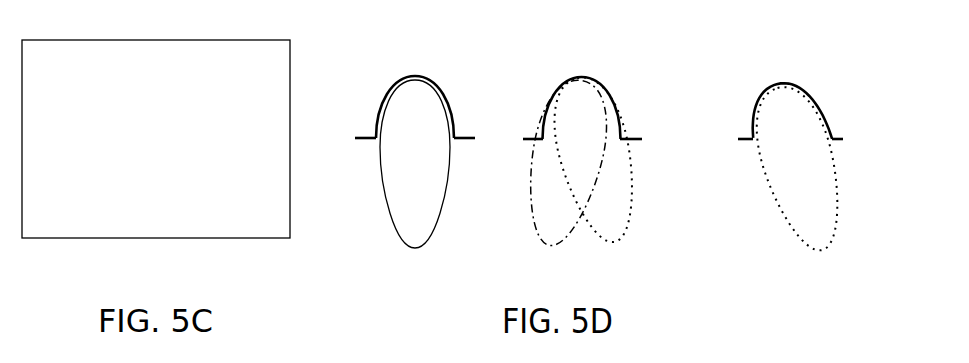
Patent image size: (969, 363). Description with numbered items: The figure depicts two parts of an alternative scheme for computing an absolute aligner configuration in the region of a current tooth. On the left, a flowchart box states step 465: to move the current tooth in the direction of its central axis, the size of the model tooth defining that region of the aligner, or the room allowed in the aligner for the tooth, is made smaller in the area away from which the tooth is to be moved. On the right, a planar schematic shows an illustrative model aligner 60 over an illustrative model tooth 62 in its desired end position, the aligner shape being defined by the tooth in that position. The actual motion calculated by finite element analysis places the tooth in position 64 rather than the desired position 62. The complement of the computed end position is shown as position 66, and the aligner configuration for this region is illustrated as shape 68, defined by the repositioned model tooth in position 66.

In FIG. 5C, the step of reducing model tooth size 465 is at (155, 40).
In FIG. 5D, the model aligner 60 is at (422, 73).
In FIG. 5D, the model tooth 62 is at (418, 248).
In FIG. 5D, the actual tooth position 64 is at (543, 237).
In FIG. 5D, the complement position 66 is at (622, 238).
In FIG. 5D, the computed aligner shape 68 is at (798, 90).